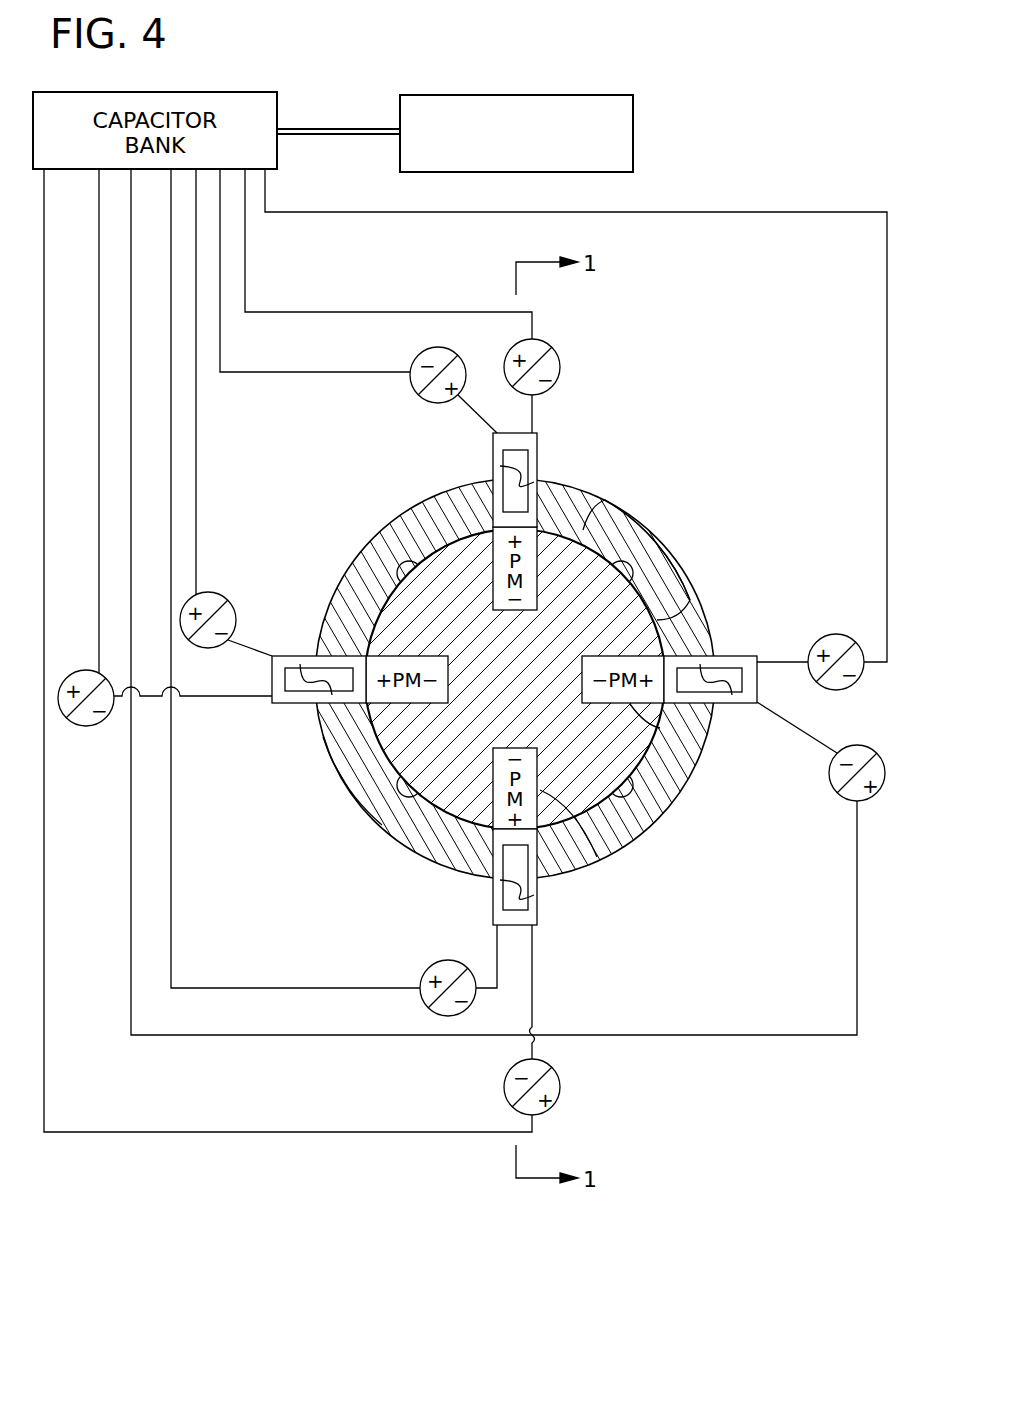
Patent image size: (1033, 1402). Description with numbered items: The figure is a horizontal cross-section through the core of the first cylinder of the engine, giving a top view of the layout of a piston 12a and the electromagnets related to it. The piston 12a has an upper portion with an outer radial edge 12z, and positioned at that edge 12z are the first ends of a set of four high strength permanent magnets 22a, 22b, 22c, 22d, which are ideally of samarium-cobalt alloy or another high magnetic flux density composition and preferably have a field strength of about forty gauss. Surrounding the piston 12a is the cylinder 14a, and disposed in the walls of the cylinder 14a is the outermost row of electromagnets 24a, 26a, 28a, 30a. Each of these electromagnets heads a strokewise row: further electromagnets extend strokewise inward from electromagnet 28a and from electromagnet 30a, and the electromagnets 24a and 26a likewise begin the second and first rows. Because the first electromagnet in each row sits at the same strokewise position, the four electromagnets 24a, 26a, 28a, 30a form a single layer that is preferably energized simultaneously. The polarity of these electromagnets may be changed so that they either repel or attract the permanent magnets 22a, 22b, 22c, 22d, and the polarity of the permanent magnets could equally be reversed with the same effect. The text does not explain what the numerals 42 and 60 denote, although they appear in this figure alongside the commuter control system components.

The computer 42 is at (633, 131).
The outer radial edge 12z is at (478, 512).
The piston 12a is at (415, 850).
The cylinder 14a is at (693, 600).
The permanent magnet 22a is at (583, 530).
The permanent magnet 22b is at (660, 728).
The permanent magnet 22c is at (600, 857).
The permanent magnet 22d is at (400, 705).
The electromagnet 24a is at (537, 457).
The electromagnet 26a is at (537, 895).
The electromagnet 28a is at (715, 657).
The electromagnet 30a is at (286, 703).
The rotor projection 60 is at (398, 567).